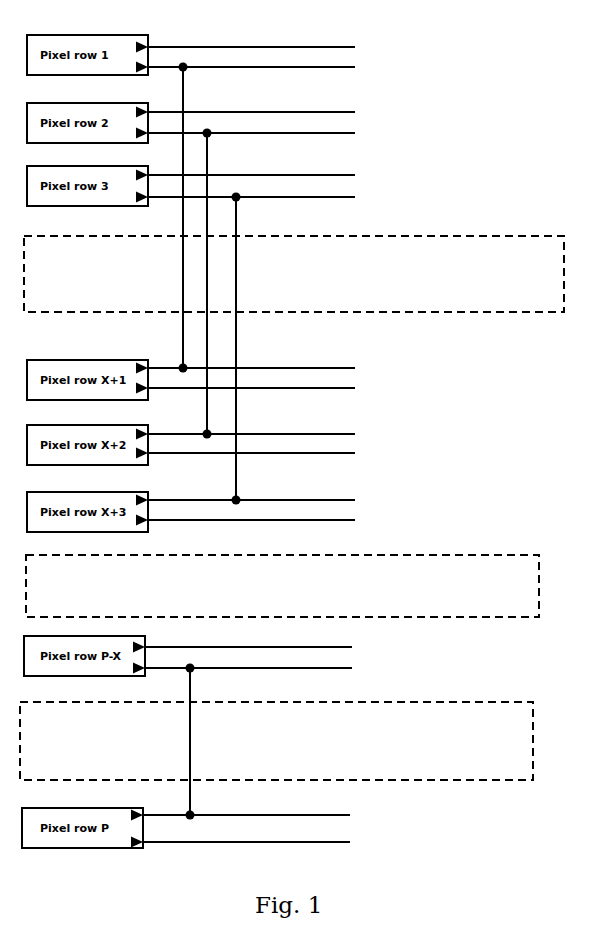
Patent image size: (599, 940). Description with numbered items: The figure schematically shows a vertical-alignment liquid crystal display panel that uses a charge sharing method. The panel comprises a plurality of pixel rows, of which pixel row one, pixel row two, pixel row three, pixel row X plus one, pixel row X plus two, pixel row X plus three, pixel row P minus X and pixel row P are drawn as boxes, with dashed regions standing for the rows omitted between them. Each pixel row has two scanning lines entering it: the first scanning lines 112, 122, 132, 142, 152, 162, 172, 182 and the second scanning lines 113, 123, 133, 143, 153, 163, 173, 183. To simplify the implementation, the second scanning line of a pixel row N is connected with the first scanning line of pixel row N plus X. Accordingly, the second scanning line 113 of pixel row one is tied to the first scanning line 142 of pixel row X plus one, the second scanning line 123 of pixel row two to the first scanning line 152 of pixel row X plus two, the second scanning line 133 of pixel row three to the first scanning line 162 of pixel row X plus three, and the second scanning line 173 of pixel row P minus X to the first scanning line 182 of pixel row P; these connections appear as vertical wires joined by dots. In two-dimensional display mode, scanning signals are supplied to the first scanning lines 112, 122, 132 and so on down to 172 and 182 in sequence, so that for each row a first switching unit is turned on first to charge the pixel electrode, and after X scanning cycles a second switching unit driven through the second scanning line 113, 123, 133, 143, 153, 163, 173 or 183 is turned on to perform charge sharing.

The first scanning line 112 is at (292, 47).
The second scanning line 113 is at (248, 67).
The first scanning line 122 is at (303, 112).
The second scanning line 123 is at (245, 133).
The first scanning line 132 is at (303, 175).
The second scanning line 133 is at (248, 197).
The first scanning line 142 is at (298, 368).
The second scanning line 143 is at (252, 388).
The first scanning line 152 is at (298, 434).
The second scanning line 153 is at (252, 453).
The first scanning line 162 is at (298, 500).
The second scanning line 163 is at (252, 520).
The first scanning line 172 is at (282, 647).
The second scanning line 173 is at (213, 668).
The first scanning line 182 is at (282, 815).
The second scanning line 183 is at (330, 842).